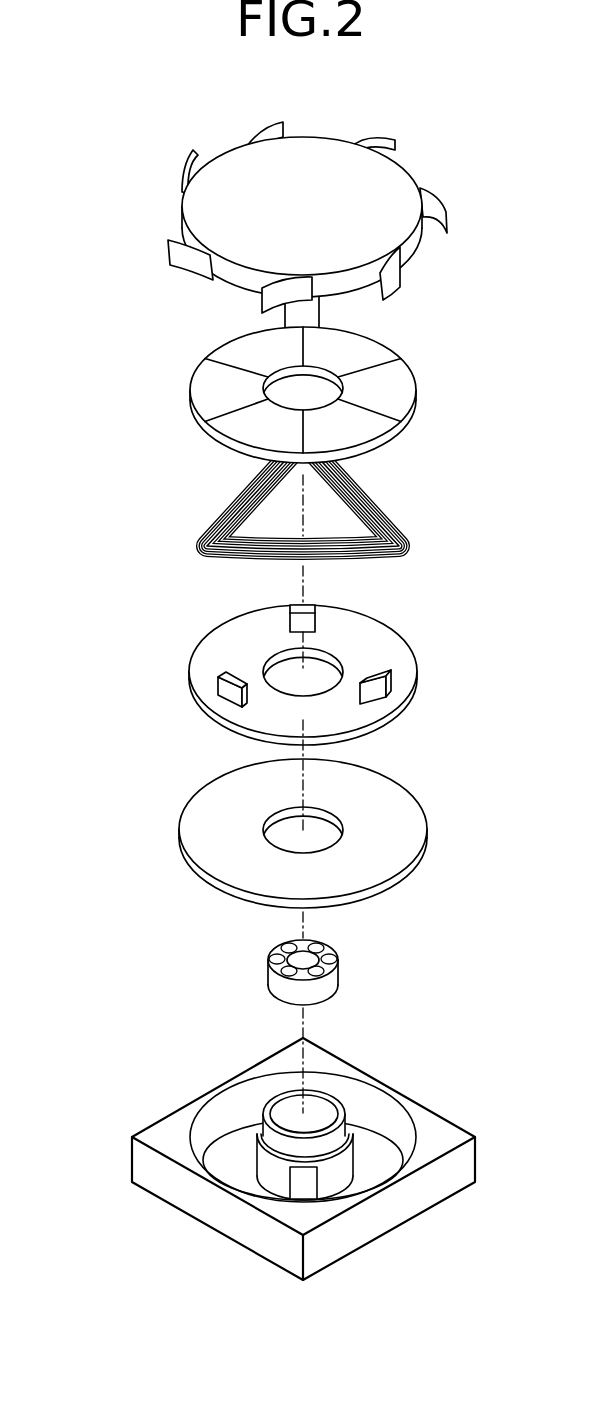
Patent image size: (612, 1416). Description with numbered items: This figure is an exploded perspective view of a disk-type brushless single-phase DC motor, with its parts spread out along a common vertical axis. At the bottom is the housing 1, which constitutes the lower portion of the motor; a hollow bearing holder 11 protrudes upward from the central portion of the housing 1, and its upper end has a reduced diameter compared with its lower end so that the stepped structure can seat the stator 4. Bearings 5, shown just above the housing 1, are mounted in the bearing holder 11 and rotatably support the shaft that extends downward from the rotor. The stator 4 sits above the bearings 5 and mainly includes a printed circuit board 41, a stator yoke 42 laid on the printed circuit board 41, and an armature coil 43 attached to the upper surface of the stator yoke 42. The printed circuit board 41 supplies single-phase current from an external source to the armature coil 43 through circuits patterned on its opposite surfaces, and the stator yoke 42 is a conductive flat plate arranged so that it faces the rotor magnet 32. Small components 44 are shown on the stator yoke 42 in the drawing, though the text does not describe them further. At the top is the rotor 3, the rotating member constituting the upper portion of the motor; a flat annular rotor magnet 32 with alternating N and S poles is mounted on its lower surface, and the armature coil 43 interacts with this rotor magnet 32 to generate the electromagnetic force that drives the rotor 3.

The housing 1 is at (175, 1127).
The bearing holder 11 is at (327, 1142).
The rotor 3 is at (380, 193).
The rotor magnet 32 is at (205, 393).
The stator 4 is at (240, 617).
The printed circuit board 41 is at (259, 833).
The stator yoke 42 is at (281, 677).
The armature coil 43 is at (232, 505).
The electronic component 44 is at (378, 688).
The bearings 5 is at (287, 988).